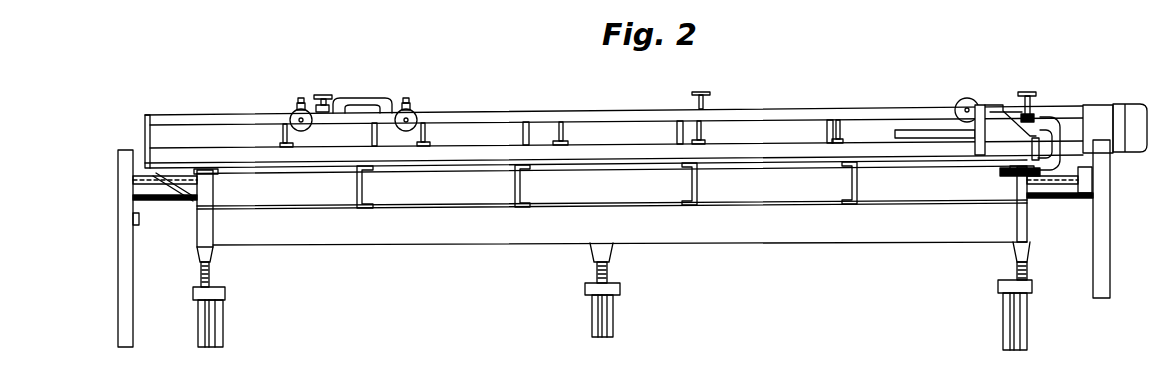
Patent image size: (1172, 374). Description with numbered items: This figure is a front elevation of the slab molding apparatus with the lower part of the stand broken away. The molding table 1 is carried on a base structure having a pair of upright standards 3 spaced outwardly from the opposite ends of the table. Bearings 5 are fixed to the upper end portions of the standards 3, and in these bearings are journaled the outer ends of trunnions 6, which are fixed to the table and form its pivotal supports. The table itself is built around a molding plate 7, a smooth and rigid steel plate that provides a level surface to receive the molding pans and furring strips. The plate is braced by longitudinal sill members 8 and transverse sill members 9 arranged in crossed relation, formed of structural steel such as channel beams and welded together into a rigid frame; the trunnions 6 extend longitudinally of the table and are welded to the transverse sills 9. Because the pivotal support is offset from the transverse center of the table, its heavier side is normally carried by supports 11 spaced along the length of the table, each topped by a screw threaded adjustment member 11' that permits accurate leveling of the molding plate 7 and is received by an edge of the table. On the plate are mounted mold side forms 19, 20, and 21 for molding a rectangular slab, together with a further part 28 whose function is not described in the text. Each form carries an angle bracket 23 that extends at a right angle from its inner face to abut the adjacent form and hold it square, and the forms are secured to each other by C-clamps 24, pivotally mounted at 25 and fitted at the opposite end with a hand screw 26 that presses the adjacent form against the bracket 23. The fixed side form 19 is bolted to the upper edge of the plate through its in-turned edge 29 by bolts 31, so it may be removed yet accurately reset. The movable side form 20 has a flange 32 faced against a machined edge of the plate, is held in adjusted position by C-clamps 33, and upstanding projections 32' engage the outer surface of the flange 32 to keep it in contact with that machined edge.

The molding table 1 is at (803, 98).
The upright standard 3 is at (118, 320).
The bearing 5 is at (140, 220).
The trunnion 6 is at (173, 205).
The molding plate 7 is at (592, 158).
The longitudinal sill member 8 is at (436, 243).
The transverse sill member 9 is at (374, 186).
The support 11 is at (623, 315).
The screw threaded adjustment member 11' is at (633, 264).
The mold side form 19 is at (777, 104).
The mold side form 20 is at (1000, 106).
The mold side form 21 is at (1115, 108).
The angle bracket 23 is at (975, 108).
The C-clamp 24 is at (396, 100).
The pivot 25 is at (962, 110).
The hand screw 26 is at (414, 112).
The pipe rail 28 is at (750, 115).
The in-turned edge 29 is at (477, 150).
The bolt 31 is at (282, 107).
The flange 32 is at (1099, 118).
The upstanding projection 32' is at (1080, 167).
The C-clamp 33 is at (712, 91).